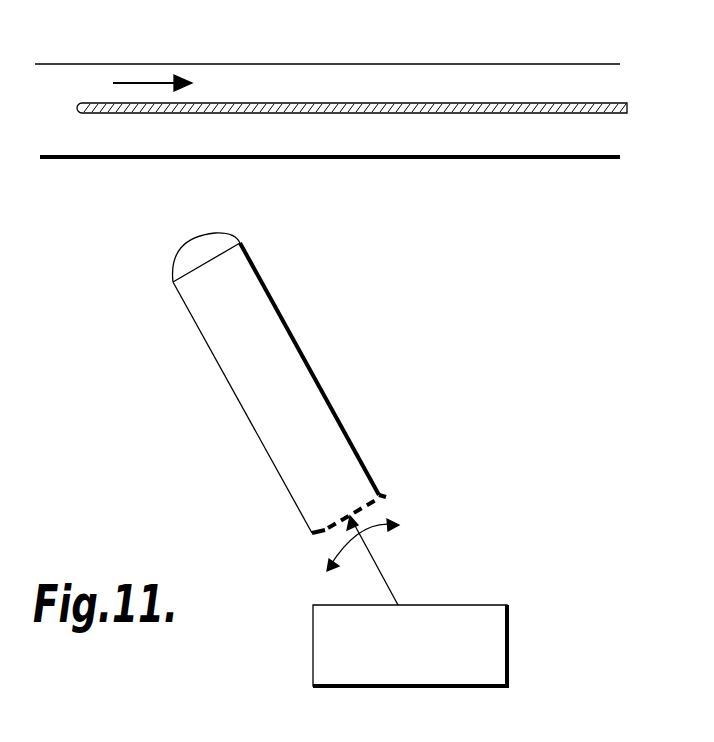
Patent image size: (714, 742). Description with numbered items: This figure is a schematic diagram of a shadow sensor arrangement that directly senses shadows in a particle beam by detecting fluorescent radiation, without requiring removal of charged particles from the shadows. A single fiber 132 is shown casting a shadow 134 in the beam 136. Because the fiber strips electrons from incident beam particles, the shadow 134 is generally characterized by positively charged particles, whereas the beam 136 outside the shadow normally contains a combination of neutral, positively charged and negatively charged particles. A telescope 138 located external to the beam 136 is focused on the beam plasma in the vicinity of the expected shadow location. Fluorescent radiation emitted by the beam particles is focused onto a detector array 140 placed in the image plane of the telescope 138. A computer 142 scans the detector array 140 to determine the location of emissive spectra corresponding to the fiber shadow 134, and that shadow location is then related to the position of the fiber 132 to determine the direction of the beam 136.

The fiber 132 is at (77, 108).
The shadow 134 is at (233, 103).
The beam 136 is at (430, 158).
The telescope 138 is at (307, 358).
The detector array 140 is at (363, 473).
The computer 142 is at (463, 605).